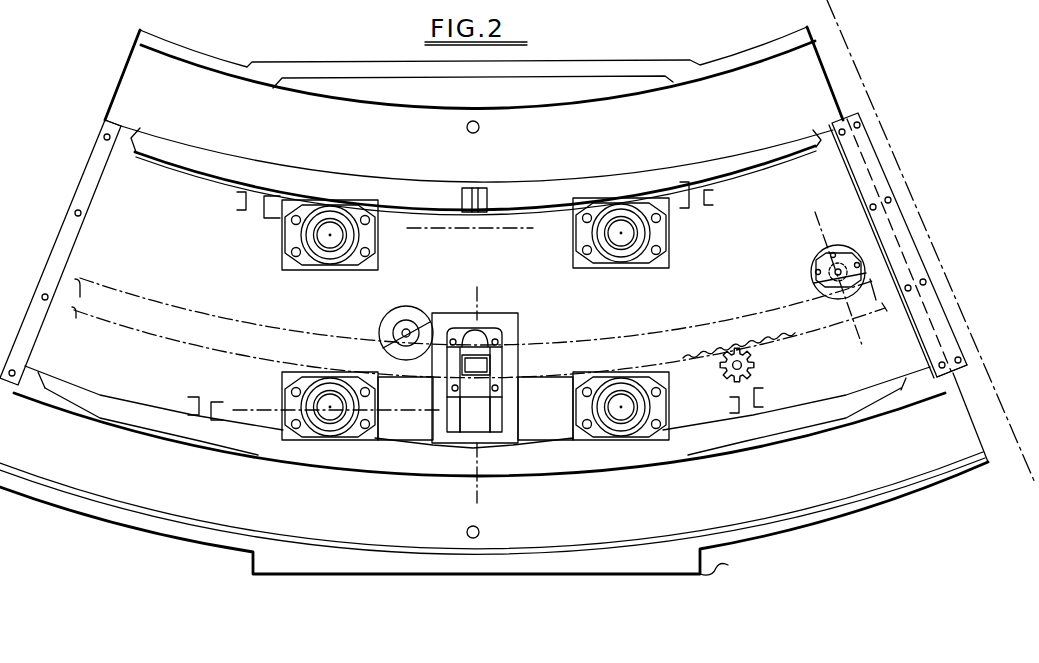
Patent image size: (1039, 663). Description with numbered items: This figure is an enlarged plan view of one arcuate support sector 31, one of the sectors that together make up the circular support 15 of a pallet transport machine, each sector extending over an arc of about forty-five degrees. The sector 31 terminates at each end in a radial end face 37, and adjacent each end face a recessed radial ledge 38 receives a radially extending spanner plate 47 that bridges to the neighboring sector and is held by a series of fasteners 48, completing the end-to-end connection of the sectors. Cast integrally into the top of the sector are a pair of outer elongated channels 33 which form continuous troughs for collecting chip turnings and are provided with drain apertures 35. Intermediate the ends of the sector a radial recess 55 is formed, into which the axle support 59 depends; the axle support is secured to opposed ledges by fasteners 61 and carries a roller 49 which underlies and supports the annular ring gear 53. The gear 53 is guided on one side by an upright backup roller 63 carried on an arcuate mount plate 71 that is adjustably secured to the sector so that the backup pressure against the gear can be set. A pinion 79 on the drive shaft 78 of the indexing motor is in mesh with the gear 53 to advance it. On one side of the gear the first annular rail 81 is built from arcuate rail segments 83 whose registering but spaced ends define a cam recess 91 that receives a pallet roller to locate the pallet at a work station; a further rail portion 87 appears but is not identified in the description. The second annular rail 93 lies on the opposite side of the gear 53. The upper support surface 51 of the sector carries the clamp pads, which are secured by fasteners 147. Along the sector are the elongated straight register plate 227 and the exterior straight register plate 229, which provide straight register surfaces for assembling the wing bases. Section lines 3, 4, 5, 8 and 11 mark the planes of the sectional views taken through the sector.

The section line 3- 3 is at (796, 8).
The section line 4- 4 is at (520, 234).
The section line 5- 5 is at (851, 334).
The section line 8- 8 is at (470, 487).
The section line 11- 11 is at (408, 416).
The support 15 is at (465, 287).
The arcuate support sector 31 is at (114, 70).
The outer elongated channels 33 is at (703, 92).
The drain apertures 35 is at (479, 127).
The radial end face 37 is at (112, 102).
The recessed radial ledges 38 is at (96, 170).
The spanner plate 47 is at (878, 179).
The fasteners 48 is at (880, 207).
The rollers 49 is at (487, 366).
The upper support surface 51 is at (283, 258).
The annular ring gear 53 is at (722, 320).
The radial recess 55 is at (470, 425).
The axle support 59 is at (478, 400).
The fasteners 61 is at (502, 343).
The backup roller 63 is at (404, 326).
The arcuate mount plate 71 is at (380, 332).
The drive shaft 78 is at (752, 360).
The pinion 79 is at (752, 376).
The first annular rail 81 is at (297, 172).
The arcuate rail segments 83 is at (446, 191).
The rail section 87 is at (479, 187).
The cam recess 91 is at (487, 197).
The second annular rail 93 is at (790, 428).
The fasteners 147 is at (658, 253).
The elongated straight register plate 227 is at (577, 64).
The exterior straight register plate 229 is at (732, 561).